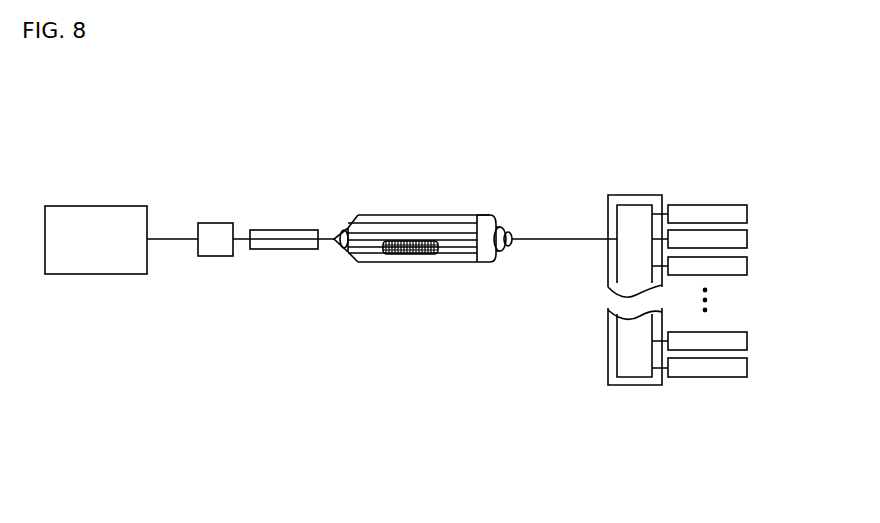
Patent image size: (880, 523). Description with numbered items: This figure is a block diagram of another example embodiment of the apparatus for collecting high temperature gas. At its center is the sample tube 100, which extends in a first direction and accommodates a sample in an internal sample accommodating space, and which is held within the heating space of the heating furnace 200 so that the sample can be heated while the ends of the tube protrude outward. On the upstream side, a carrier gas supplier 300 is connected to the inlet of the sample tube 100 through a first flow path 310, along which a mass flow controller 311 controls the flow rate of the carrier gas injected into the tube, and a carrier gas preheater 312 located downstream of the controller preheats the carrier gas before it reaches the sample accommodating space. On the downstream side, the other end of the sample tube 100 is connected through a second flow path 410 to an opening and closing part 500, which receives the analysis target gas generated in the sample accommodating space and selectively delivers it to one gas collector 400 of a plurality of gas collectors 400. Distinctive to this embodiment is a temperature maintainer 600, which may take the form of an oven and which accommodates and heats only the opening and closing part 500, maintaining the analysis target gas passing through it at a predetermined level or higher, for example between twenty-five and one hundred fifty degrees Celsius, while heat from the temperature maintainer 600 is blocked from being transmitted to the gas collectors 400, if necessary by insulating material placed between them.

The sample tube 100 is at (508, 236).
The heating furnace 200 is at (370, 262).
The carrier gas supplier 300 is at (92, 274).
The first flow path 310 is at (178, 239).
The mass flow controller 311 is at (213, 223).
The carrier gas preheater 312 is at (288, 230).
The gas collectors 400 is at (727, 377).
The second flow path 410 is at (558, 242).
The opening and closing part 500 is at (630, 377).
The temperature maintainer 600 is at (654, 195).